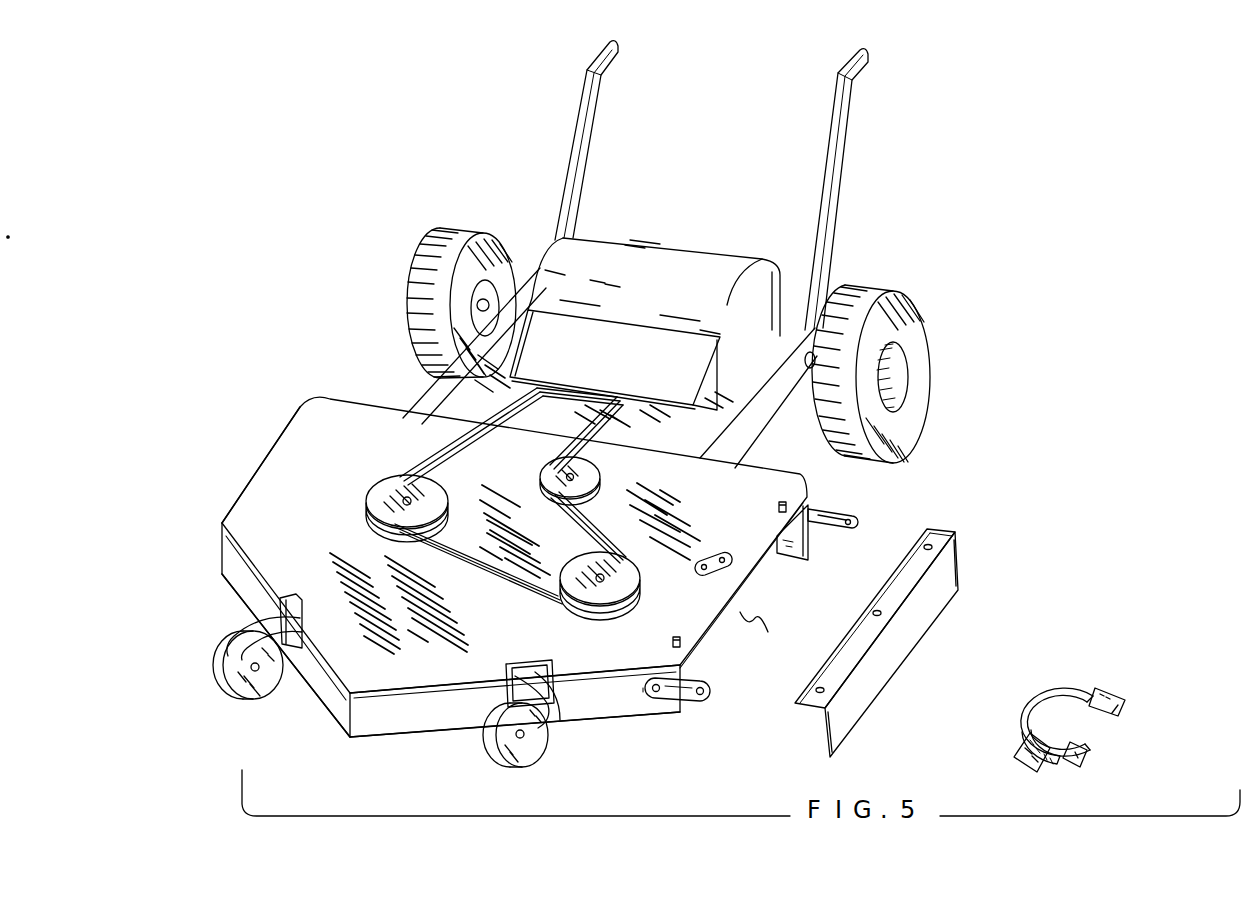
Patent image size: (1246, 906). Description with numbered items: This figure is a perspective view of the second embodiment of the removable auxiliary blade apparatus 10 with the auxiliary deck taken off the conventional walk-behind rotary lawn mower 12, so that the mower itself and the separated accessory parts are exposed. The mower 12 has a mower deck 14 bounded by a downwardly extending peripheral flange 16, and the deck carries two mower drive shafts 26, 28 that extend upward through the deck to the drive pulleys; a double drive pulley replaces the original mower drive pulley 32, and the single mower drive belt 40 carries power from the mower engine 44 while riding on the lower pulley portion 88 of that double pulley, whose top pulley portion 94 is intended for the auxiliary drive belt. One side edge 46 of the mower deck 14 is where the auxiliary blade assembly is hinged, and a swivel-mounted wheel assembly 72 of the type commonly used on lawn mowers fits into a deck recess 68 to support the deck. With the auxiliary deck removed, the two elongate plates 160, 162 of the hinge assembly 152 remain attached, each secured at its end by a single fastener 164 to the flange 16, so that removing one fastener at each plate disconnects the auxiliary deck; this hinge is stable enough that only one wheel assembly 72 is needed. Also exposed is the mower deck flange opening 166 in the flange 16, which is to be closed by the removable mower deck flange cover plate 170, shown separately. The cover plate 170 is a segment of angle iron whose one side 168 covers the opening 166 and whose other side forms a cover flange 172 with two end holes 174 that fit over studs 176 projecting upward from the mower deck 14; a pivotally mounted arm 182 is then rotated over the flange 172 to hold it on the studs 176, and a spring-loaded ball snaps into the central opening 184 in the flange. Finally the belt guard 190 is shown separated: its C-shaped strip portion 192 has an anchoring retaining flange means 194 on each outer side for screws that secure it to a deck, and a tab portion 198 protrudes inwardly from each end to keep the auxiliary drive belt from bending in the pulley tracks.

The removable auxiliary blade apparatus 10 is at (930, 240).
The rotary lawn mower 12 is at (722, 168).
The mower deck 14 is at (360, 665).
The peripheral flange 16 is at (236, 579).
The mower drive shaft 26 is at (395, 480).
The mower drive shaft 28 is at (575, 617).
The mower drive pulley 32 is at (367, 487).
The mower drive belt 40 is at (400, 478).
The mower engine 44 is at (664, 252).
The side edge 46 is at (258, 472).
The deck recess 68 is at (300, 660).
The swivel-mounted wheel assembly 72 is at (262, 690).
The lower pulley portion 88 is at (615, 605).
The top pulley portion 94 is at (623, 567).
The hinge assembly 152 is at (650, 737).
The elongate plate 160 is at (658, 700).
The elongate plate 162 is at (808, 533).
The fastener 164 is at (704, 700).
The mower deck flange opening 166 is at (773, 627).
The cover plate side 168 is at (920, 618).
The mower deck flange cover plate 170 is at (909, 627).
The cover flange 172 is at (920, 567).
The end hole 174 is at (938, 535).
The stud 176 is at (808, 513).
The pivotally mounted arm 182 is at (718, 569).
The central opening 184 is at (890, 595).
The belt guard 190 is at (1070, 721).
The C-shaped strip portion 192 is at (1024, 717).
The anchoring retaining flange means 194 is at (1122, 700).
The tab portion 198 is at (1105, 733).